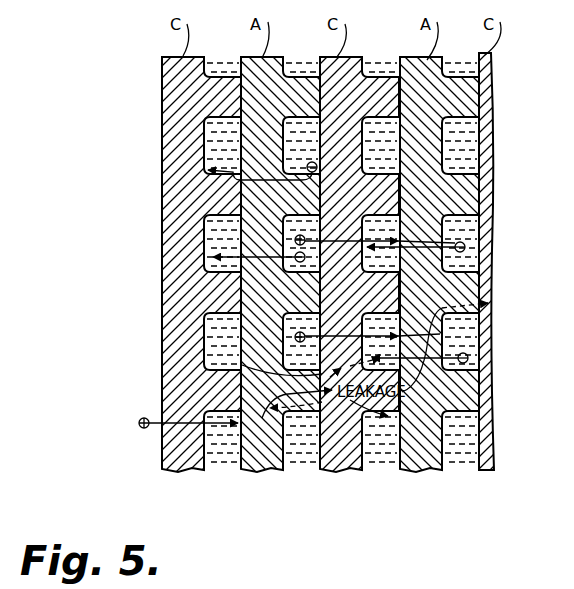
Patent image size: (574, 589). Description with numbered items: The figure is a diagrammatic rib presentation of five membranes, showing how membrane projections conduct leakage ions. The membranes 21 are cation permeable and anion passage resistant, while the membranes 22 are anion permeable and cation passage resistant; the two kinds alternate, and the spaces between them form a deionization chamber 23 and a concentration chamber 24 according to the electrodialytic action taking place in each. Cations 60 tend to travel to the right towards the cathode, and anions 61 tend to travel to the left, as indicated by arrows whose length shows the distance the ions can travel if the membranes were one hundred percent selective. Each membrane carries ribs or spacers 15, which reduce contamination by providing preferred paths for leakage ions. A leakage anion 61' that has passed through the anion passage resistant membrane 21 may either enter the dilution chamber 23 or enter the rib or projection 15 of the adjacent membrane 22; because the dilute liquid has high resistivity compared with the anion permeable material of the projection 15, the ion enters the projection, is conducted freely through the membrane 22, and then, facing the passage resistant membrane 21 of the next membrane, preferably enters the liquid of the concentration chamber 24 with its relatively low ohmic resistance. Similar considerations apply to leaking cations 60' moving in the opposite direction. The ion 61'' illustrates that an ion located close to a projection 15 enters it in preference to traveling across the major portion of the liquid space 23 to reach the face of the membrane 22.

The rib or projection 15 is at (381, 187).
The cation permeable membrane 21 is at (185, 470).
The anion permeable membrane 22 is at (272, 452).
The deionization chamber 23 is at (152, 437).
The concentration chamber 24 is at (225, 450).
The cation 60 is at (372, 232).
The leakage cation 60' is at (275, 380).
The anion 61 is at (342, 247).
The leakage anion 61' is at (425, 347).
The ion 61'' is at (262, 158).